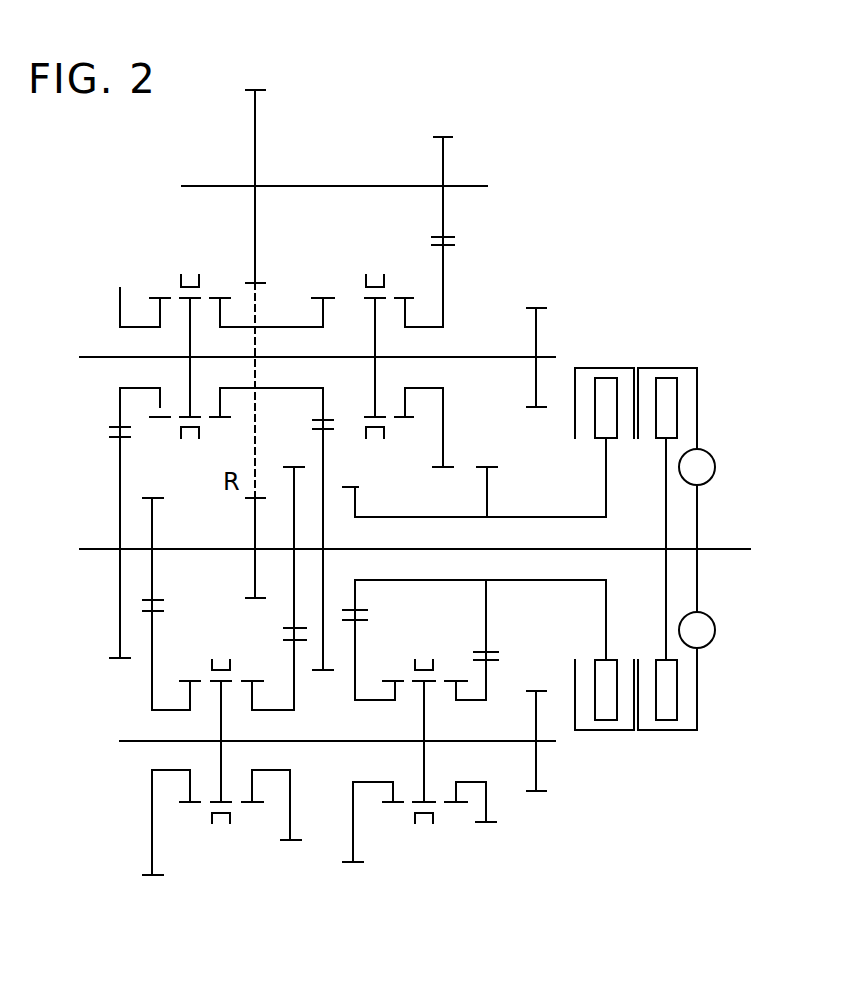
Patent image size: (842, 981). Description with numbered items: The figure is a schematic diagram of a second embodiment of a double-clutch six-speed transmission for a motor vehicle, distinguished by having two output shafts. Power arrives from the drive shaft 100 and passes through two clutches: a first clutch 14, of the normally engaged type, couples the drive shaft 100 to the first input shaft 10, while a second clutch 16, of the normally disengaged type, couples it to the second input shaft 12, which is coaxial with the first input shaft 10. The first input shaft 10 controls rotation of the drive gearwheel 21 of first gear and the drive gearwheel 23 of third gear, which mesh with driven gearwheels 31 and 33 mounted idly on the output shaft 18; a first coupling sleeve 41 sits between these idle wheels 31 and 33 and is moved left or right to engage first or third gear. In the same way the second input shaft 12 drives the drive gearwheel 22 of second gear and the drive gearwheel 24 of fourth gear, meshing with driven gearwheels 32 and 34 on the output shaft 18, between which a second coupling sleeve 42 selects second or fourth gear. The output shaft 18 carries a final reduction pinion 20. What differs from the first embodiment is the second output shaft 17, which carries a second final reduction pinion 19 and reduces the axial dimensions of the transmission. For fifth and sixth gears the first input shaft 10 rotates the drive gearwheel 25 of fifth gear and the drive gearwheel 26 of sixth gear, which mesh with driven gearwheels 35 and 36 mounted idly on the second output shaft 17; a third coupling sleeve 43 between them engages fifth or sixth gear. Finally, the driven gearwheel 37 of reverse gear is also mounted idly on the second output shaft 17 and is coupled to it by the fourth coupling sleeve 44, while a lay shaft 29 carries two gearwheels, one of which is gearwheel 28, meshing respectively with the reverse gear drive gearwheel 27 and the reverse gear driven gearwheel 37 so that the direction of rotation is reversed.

The first input shaft 10 is at (100, 549).
The drive shaft 100 is at (732, 549).
The second input shaft 12 is at (535, 580).
The first clutch 14 is at (680, 372).
The second clutch 16 is at (604, 376).
The second output shaft 17 is at (97, 355).
The output shaft 18 is at (124, 742).
The second final reduction pinion 19 is at (536, 308).
The final reduction pinion 20 is at (536, 760).
The drive gearwheel of first gear 21 is at (153, 497).
The drive gearwheel of second gear 22 is at (345, 487).
The drive gearwheel of third gear 23 is at (292, 466).
The drive gearwheel of fourth gear 24 is at (487, 466).
The drive gearwheel of fifth gear 25 is at (116, 658).
The drive gearwheel of sixth gear 26 is at (323, 670).
The reverse gear drive gearwheel 27 is at (245, 599).
The gearwheel on lay shaft 28 is at (257, 89).
The lay shaft 29 is at (328, 185).
The driven gearwheel of first gear 31 is at (148, 875).
The driven gearwheel of second gear 32 is at (354, 866).
The driven gearwheel of third gear 33 is at (292, 822).
The driven gearwheel of fourth gear 34 is at (490, 804).
The driven gearwheel of fifth gear 35 is at (118, 289).
The driven gearwheel of sixth gear 36 is at (326, 297).
The driven gearwheel of reverse gear 37 is at (446, 470).
The first coupling sleeve 41 is at (225, 823).
The second coupling sleeve 42 is at (432, 823).
The third coupling sleeve 43 is at (190, 275).
The fourth coupling sleeve 44 is at (376, 277).